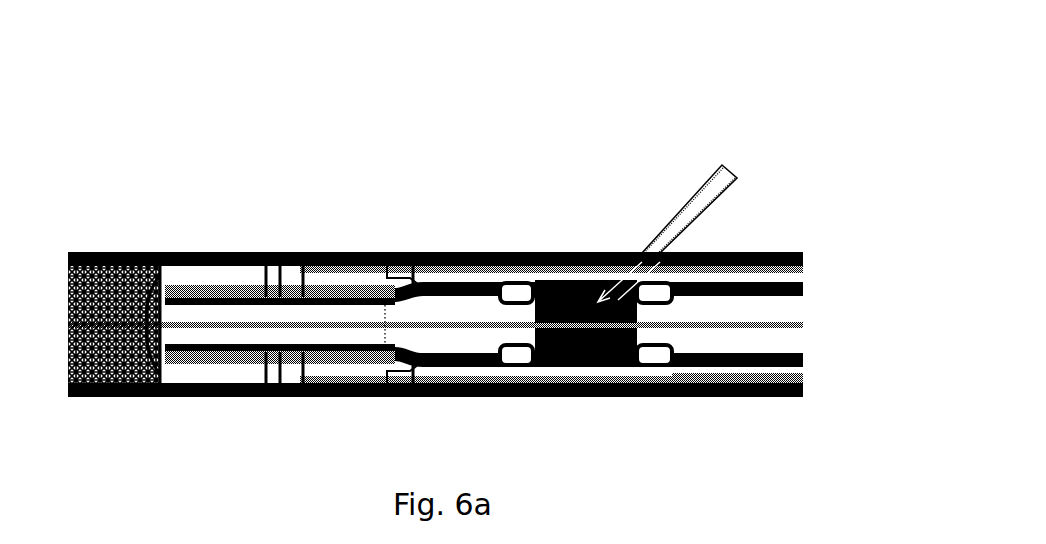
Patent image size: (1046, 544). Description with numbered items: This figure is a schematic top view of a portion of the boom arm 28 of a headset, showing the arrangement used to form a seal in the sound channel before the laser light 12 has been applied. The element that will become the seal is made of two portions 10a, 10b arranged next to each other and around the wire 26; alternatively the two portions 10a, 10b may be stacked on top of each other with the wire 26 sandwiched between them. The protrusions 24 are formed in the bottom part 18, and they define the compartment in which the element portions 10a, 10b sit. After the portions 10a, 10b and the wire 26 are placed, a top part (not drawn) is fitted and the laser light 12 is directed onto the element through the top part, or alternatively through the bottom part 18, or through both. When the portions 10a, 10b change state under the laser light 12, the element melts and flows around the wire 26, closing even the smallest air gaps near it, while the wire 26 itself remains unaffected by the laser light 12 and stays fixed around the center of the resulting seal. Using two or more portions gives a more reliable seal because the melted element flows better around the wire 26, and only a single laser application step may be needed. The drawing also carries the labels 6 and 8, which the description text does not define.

The boom arm 28 is at (461, 150).
The bottom part 18 is at (322, 250).
The wire 26 is at (258, 322).
The protrusions 24 is at (515, 292).
The element portion 10a is at (575, 365).
The element portion 10b is at (592, 282).
The laser light 12 is at (730, 178).
The guidewire 6 is at (773, 332).
The lumen 8 is at (754, 340).